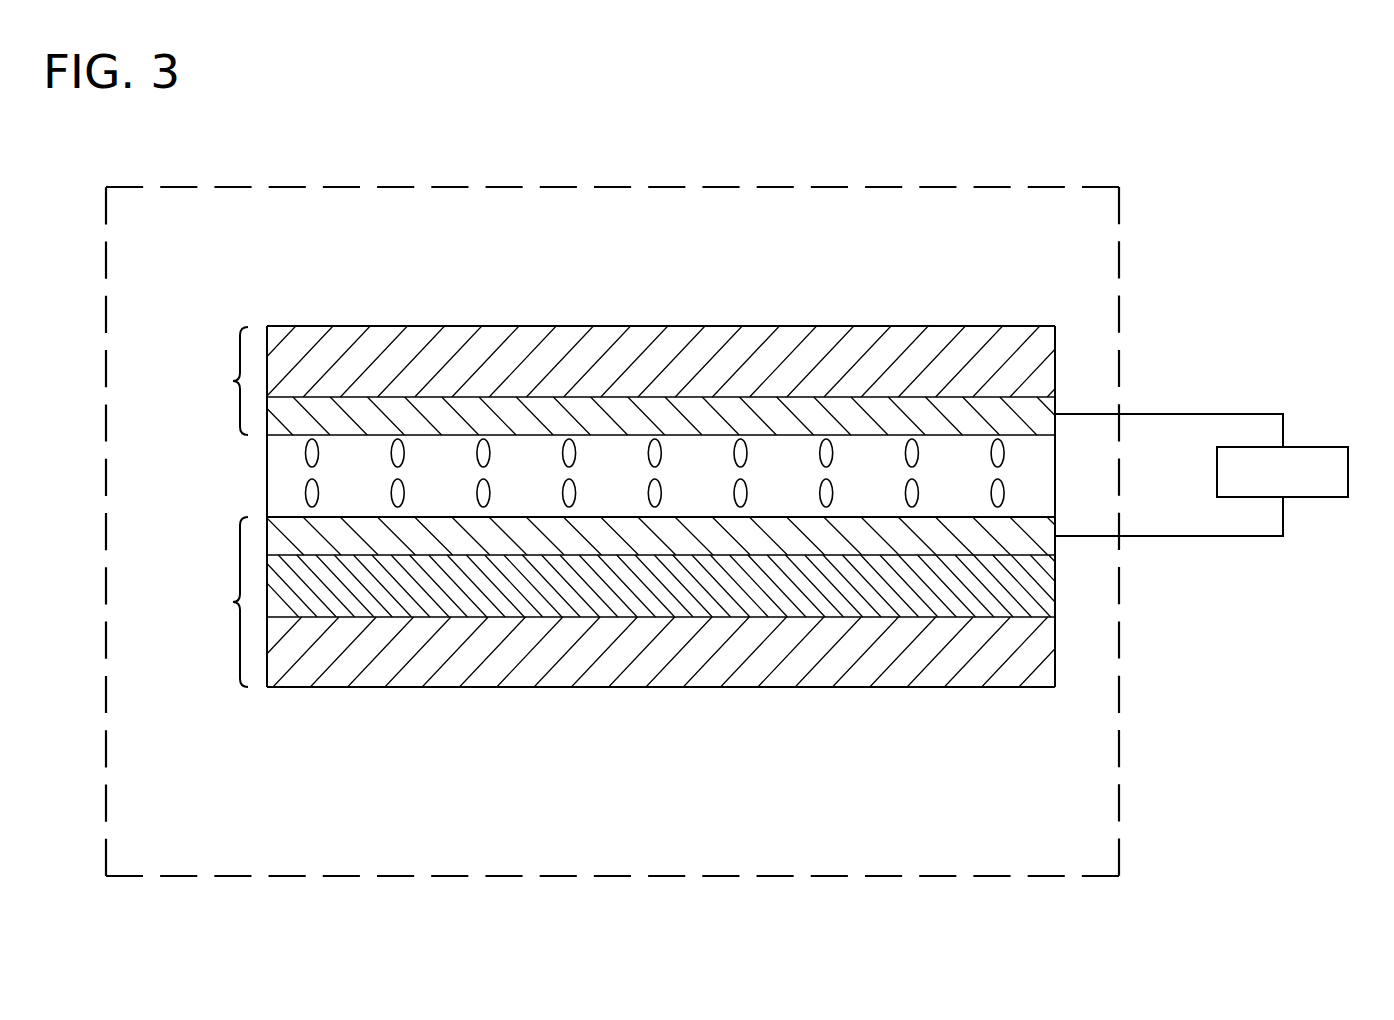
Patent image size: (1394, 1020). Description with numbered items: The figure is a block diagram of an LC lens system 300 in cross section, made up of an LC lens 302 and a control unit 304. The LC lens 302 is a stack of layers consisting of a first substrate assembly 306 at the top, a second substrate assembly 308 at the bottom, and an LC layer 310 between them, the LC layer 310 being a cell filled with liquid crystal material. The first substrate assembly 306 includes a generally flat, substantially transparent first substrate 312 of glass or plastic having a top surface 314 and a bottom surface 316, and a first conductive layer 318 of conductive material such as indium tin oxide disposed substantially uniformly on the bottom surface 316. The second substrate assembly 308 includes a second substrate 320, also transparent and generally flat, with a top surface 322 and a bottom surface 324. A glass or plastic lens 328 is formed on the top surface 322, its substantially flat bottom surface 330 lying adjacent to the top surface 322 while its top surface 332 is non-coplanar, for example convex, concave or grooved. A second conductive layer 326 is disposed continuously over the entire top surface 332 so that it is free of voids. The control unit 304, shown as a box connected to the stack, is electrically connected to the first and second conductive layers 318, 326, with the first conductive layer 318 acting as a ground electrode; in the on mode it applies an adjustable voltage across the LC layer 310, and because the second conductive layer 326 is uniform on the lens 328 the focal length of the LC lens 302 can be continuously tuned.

The LC lens system 300 is at (655, 82).
The LC lens 302 is at (938, 187).
The control unit 304 is at (1323, 447).
The first substrate assembly 306 is at (613, 380).
The second substrate assembly 308 is at (613, 602).
The LC layer 310 is at (267, 481).
The first substrate 312 is at (377, 340).
The top surface 314 is at (607, 324).
The bottom surface 316 is at (463, 393).
The first conductive layer 318 is at (772, 412).
The second substrate 320 is at (373, 672).
The top surface 322 is at (463, 617).
The bottom surface 324 is at (607, 688).
The second conductive layer 326 is at (538, 543).
The lens 328 is at (772, 602).
The bottom surface 330 is at (808, 558).
The top surface 332 is at (918, 617).